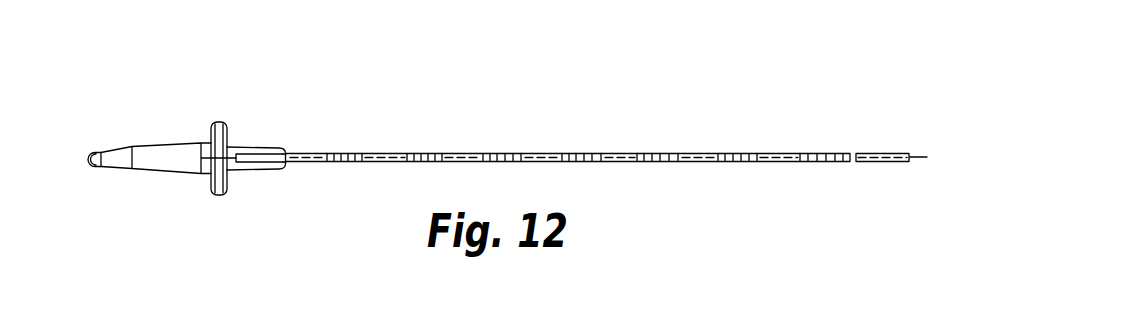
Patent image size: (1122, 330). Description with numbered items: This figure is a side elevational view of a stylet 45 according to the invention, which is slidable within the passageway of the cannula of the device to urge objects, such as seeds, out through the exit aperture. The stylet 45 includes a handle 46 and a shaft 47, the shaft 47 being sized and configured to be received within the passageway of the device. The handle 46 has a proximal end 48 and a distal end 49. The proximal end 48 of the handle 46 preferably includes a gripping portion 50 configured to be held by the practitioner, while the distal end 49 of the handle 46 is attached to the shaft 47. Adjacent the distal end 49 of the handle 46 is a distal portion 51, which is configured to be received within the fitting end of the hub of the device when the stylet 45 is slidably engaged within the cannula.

The stylet 45 is at (568, 139).
The handle 46 is at (285, 115).
The shaft 47 is at (487, 153).
The proximal end 48 is at (113, 170).
The distal end 49 is at (286, 168).
The gripping portion 50 is at (157, 170).
The distal portion 51 is at (285, 200).